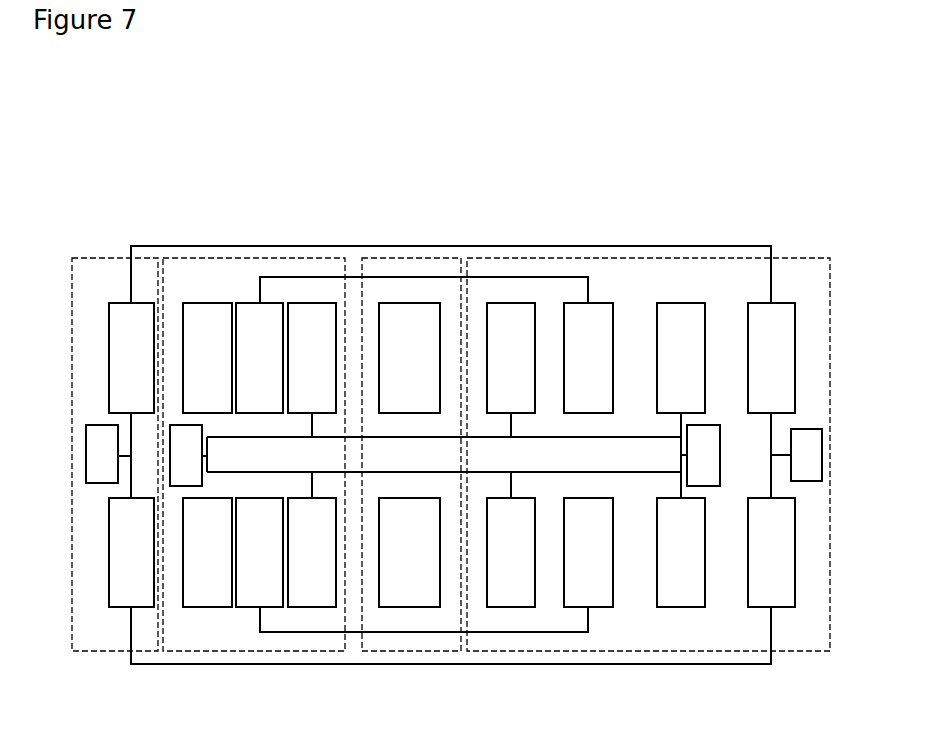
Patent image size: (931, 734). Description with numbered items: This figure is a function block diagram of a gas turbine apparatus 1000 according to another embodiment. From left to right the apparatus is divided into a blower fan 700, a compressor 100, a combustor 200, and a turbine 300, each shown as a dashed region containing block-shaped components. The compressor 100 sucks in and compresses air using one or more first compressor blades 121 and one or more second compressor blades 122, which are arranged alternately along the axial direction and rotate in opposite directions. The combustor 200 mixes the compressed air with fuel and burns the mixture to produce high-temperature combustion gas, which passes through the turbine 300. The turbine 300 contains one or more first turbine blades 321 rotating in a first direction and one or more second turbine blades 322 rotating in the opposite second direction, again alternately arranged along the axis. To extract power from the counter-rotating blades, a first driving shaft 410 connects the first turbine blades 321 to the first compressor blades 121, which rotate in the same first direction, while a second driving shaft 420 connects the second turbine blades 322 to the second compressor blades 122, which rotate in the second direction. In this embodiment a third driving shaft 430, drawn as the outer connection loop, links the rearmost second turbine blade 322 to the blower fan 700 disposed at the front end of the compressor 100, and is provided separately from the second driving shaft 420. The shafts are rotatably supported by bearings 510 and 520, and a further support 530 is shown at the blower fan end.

The gas turbine apparatus 1000 is at (174, 107).
The blower fan 700 is at (93, 256).
The compressor 100 is at (184, 256).
The combustor 200 is at (387, 257).
The turbine 300 is at (557, 258).
The first compressor blade 121 is at (208, 300).
The second compressor blade 122 is at (252, 300).
The first turbine blade 321 is at (512, 302).
The second turbine blade 322 is at (600, 302).
The first driving shaft 410 is at (637, 474).
The second driving shaft 420 is at (490, 277).
The third driving shaft 430 is at (145, 245).
The bearing 510 is at (176, 488).
The bearing 520 is at (803, 483).
The third pad 530 is at (93, 485).